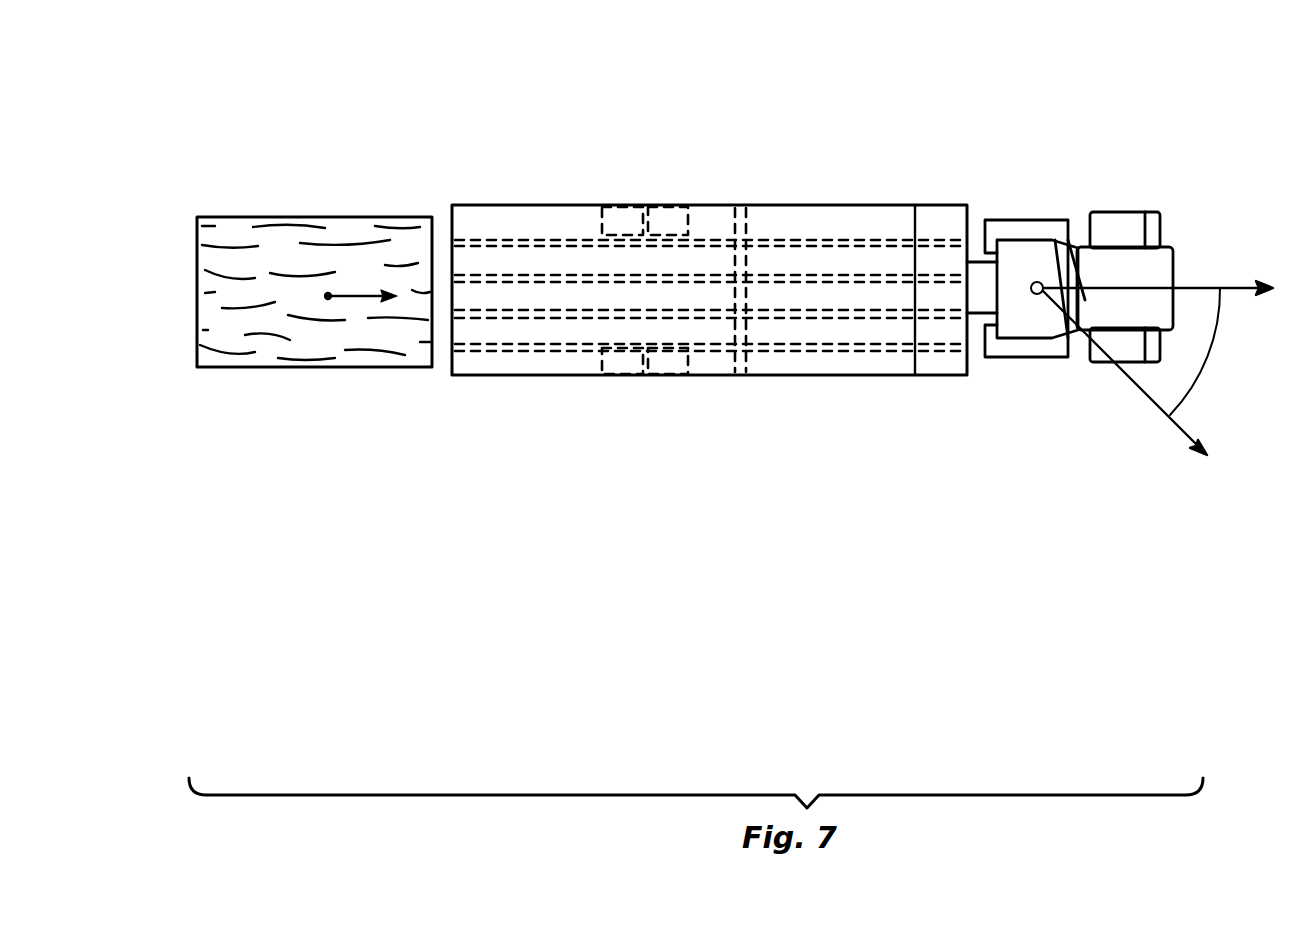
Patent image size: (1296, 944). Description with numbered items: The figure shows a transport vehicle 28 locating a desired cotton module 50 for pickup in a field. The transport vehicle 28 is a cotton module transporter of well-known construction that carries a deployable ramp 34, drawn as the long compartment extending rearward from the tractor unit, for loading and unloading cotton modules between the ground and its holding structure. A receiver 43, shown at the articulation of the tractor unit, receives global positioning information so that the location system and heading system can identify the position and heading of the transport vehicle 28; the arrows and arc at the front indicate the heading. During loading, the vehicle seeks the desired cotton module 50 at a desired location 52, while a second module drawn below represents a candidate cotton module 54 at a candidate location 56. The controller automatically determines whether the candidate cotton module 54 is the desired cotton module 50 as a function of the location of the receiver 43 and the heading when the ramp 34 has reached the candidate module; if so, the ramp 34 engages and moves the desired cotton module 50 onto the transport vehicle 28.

The transport vehicle 28 is at (940, 120).
The deployable ramp 34 is at (557, 375).
The receiver 43 is at (1037, 286).
The desired cotton module 50 is at (314, 258).
The candidate cotton module 54 is at (358, 217).
The desired location 52 is at (356, 363).
The candidate location 56 is at (328, 299).